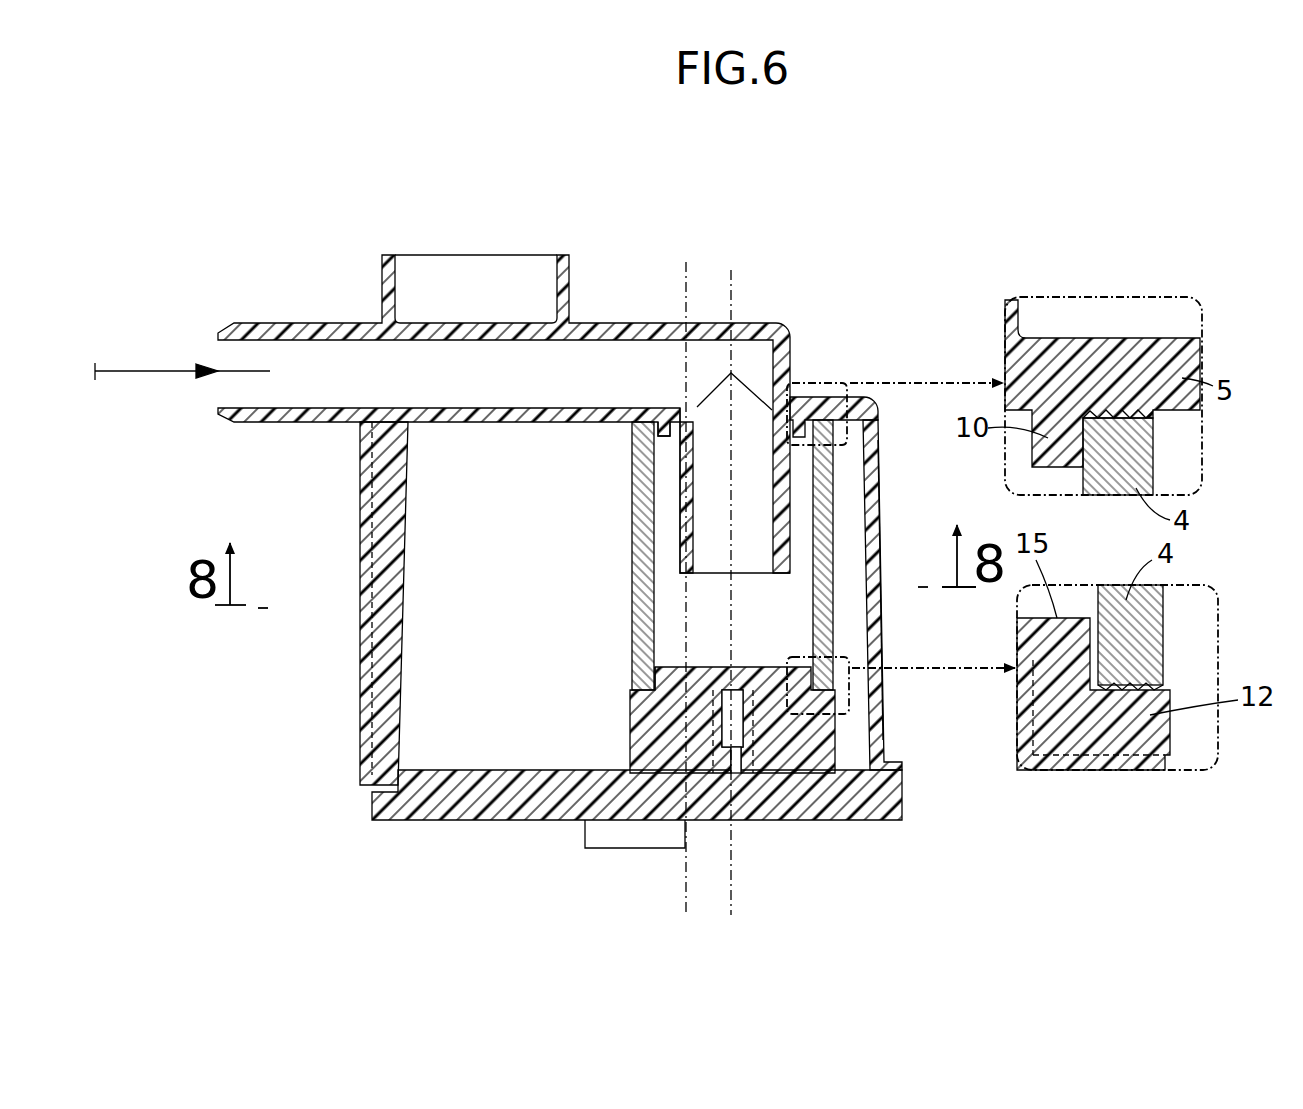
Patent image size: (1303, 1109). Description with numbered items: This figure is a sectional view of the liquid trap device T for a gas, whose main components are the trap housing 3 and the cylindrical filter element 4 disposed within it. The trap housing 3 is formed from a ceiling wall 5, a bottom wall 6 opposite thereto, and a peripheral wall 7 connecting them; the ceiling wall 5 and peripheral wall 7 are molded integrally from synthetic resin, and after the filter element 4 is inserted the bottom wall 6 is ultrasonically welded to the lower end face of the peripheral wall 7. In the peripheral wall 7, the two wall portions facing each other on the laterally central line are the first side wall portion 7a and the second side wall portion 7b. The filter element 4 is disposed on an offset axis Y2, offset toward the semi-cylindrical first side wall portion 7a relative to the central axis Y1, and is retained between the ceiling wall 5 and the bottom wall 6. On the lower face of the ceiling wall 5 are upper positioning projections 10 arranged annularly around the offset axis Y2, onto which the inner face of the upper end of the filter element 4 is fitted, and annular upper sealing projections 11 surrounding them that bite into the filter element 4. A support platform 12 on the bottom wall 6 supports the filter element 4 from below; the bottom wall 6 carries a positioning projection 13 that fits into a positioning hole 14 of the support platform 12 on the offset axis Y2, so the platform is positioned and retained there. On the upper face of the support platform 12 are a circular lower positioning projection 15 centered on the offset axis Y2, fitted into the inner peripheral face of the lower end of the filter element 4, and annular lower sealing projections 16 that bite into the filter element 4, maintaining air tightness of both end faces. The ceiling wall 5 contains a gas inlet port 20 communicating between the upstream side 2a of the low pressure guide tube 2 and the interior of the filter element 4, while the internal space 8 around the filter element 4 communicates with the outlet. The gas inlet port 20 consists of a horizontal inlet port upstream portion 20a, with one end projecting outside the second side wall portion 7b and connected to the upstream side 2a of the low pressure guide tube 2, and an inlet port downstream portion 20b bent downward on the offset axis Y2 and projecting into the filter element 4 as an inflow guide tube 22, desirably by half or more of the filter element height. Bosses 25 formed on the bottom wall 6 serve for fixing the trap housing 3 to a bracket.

The low pressure guide tube 2 is at (136, 350).
The upstream side of the low pressure guide tube 2a is at (150, 373).
The trap housing 3 is at (641, 318).
The cylindrical filter element 4 is at (634, 606).
The ceiling wall 5 is at (503, 423).
The bottom wall 6 is at (520, 806).
The peripheral wall 7 is at (884, 480).
The first side wall portion 7a is at (882, 612).
The second side wall portion 7b is at (378, 526).
The internal space 8 is at (508, 579).
The upper positioning projections 10 is at (660, 428).
The upper sealing projections 11 is at (1140, 413).
The support platform 12 is at (660, 752).
The positioning projection 13 is at (742, 752).
The positioning hole 14 is at (744, 692).
The lower positioning projection 15 is at (676, 666).
The lower sealing projections 16 is at (1134, 683).
The gas inlet port 20 is at (618, 186).
The inlet port upstream portion 20a is at (480, 370).
The inlet port downstream portion 20b is at (717, 433).
The inflow guide tube 22 is at (688, 527).
The bosses 25 is at (648, 840).
The liquid trap device T is at (762, 216).
The central axis Y1 is at (686, 264).
The offset axis Y2 is at (731, 272).